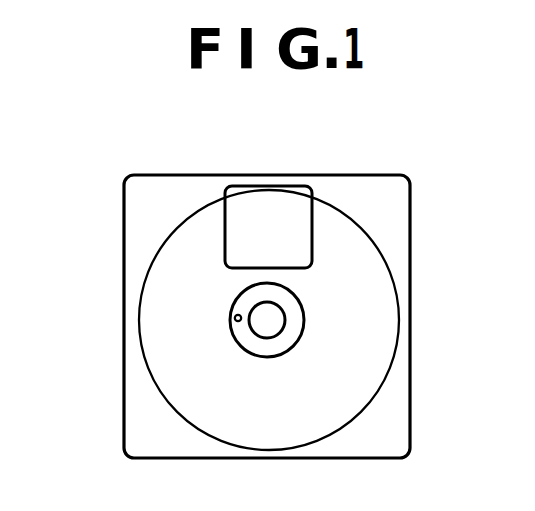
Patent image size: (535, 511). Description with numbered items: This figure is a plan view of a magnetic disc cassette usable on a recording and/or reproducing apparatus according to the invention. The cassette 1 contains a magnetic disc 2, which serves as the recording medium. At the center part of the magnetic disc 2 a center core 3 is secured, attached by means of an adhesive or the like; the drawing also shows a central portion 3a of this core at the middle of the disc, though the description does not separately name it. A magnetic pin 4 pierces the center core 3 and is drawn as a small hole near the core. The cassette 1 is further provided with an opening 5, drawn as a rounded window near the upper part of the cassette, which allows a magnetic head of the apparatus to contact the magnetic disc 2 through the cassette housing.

The cassette 1 is at (400, 220).
The magnetic disc 2 is at (344, 237).
The center core 3 is at (298, 308).
The center hole of hub 3a is at (280, 325).
The magnetic pin 4 is at (236, 322).
The opening 5 is at (232, 252).